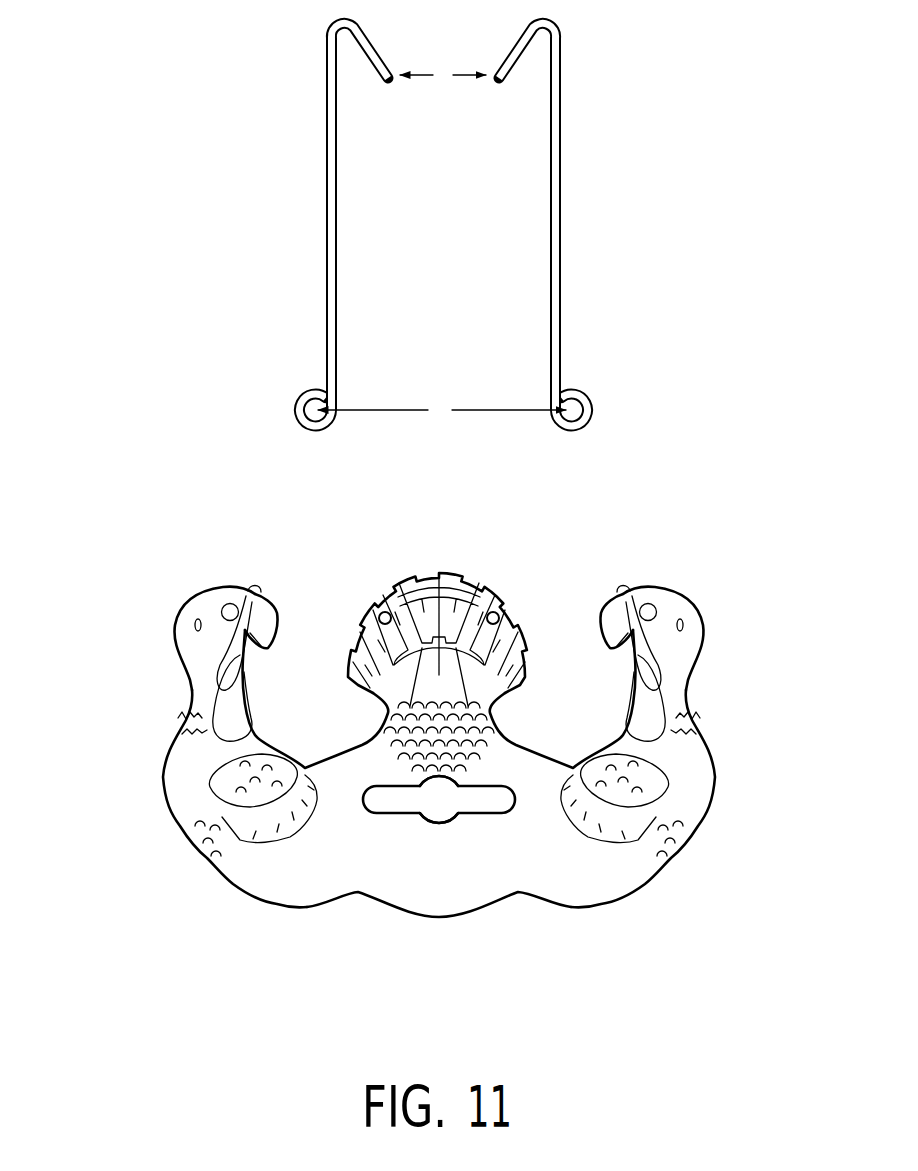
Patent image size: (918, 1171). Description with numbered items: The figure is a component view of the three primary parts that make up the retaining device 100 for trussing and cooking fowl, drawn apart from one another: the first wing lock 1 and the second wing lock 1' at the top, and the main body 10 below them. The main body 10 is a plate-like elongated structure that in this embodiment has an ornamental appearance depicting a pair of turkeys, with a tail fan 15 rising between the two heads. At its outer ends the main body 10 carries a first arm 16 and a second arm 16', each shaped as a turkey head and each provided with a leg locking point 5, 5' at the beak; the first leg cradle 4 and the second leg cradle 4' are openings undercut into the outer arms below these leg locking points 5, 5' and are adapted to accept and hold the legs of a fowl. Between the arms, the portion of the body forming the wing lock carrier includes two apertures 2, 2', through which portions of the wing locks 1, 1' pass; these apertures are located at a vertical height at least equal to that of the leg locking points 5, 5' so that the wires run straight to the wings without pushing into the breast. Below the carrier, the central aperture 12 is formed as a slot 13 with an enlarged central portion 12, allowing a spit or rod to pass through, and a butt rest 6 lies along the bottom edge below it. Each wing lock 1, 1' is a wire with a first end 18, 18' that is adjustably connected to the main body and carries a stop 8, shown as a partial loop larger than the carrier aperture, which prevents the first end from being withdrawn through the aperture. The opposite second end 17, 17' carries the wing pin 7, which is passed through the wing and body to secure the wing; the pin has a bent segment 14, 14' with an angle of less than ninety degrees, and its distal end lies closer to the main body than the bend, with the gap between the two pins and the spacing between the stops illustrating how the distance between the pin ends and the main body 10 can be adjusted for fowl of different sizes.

The retaining device 100 is at (185, 490).
The first wing lock 1 is at (270, 270).
The second wing lock 1' is at (622, 270).
The bent segment 14 is at (294, 43).
The bent segment of second wing lock 14' is at (597, 43).
The second end of first wing lock 17 is at (266, 95).
The second end of second wing lock 17' is at (626, 95).
The first end of first wing lock 18 is at (266, 410).
The first end of second wing lock 18' is at (626, 410).
The wing pin 7 is at (443, 75).
The stop 8 is at (442, 407).
The main body 10 is at (210, 882).
The butt rest 6 is at (430, 916).
The tail fan 15 is at (439, 571).
The wing lock carrier aperture 2 is at (385, 549).
The second wing lock carrier aperture 2' is at (493, 549).
The first arm 16 is at (156, 645).
The second arm 16' is at (724, 645).
The leg locking point 5 is at (273, 650).
The second leg locking point 5' is at (604, 650).
The first leg cradle 4 is at (190, 798).
The second leg cradle 4' is at (690, 798).
The handle slot 13 is at (385, 804).
The central aperture 12 is at (439, 803).